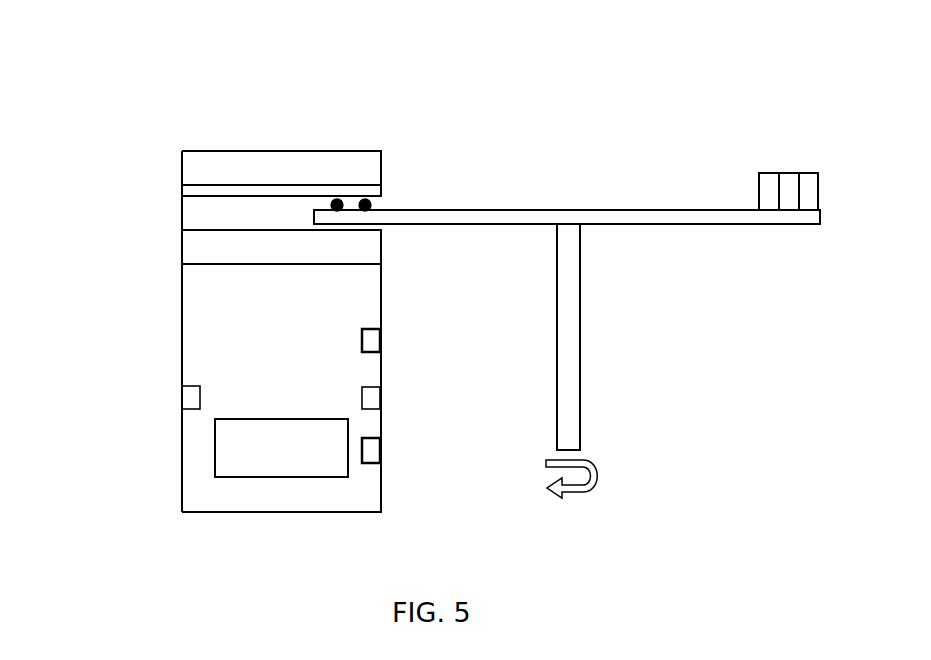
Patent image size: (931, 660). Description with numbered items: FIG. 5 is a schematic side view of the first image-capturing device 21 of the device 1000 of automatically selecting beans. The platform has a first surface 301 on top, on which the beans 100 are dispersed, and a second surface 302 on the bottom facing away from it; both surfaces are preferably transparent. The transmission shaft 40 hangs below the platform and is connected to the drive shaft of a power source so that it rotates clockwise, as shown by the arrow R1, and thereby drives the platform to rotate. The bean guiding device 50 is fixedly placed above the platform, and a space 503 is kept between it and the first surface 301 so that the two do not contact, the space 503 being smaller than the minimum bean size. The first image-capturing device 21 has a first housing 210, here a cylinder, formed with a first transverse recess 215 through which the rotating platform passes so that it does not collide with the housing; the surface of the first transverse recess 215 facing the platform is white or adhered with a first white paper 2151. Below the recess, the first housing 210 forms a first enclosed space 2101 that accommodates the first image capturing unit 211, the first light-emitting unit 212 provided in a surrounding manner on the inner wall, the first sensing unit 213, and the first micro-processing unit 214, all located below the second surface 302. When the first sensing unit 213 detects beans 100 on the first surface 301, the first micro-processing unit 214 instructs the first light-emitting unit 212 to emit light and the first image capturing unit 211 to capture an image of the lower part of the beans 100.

The device of automatically selecting beans 1000 is at (592, 28).
The first image-capturing device 21 is at (278, 147).
The first housing 210 is at (200, 150).
The first white paper 2151 is at (182, 190).
The first transverse recess 215 is at (200, 208).
The first enclosed space 2101 is at (213, 293).
The first image capturing unit 211 is at (215, 460).
The first light-emitting unit 212 is at (183, 402).
The first sensing unit 213 is at (383, 340).
The first micro-processing unit 214 is at (382, 452).
The beans 100 is at (373, 207).
The first surface 301 is at (598, 210).
The second surface 302 is at (435, 224).
The space 503 is at (771, 205).
The bean guiding device 50 is at (790, 173).
The transmission shaft 40 is at (579, 337).
The arrow indicating rotation direction R1 is at (571, 501).